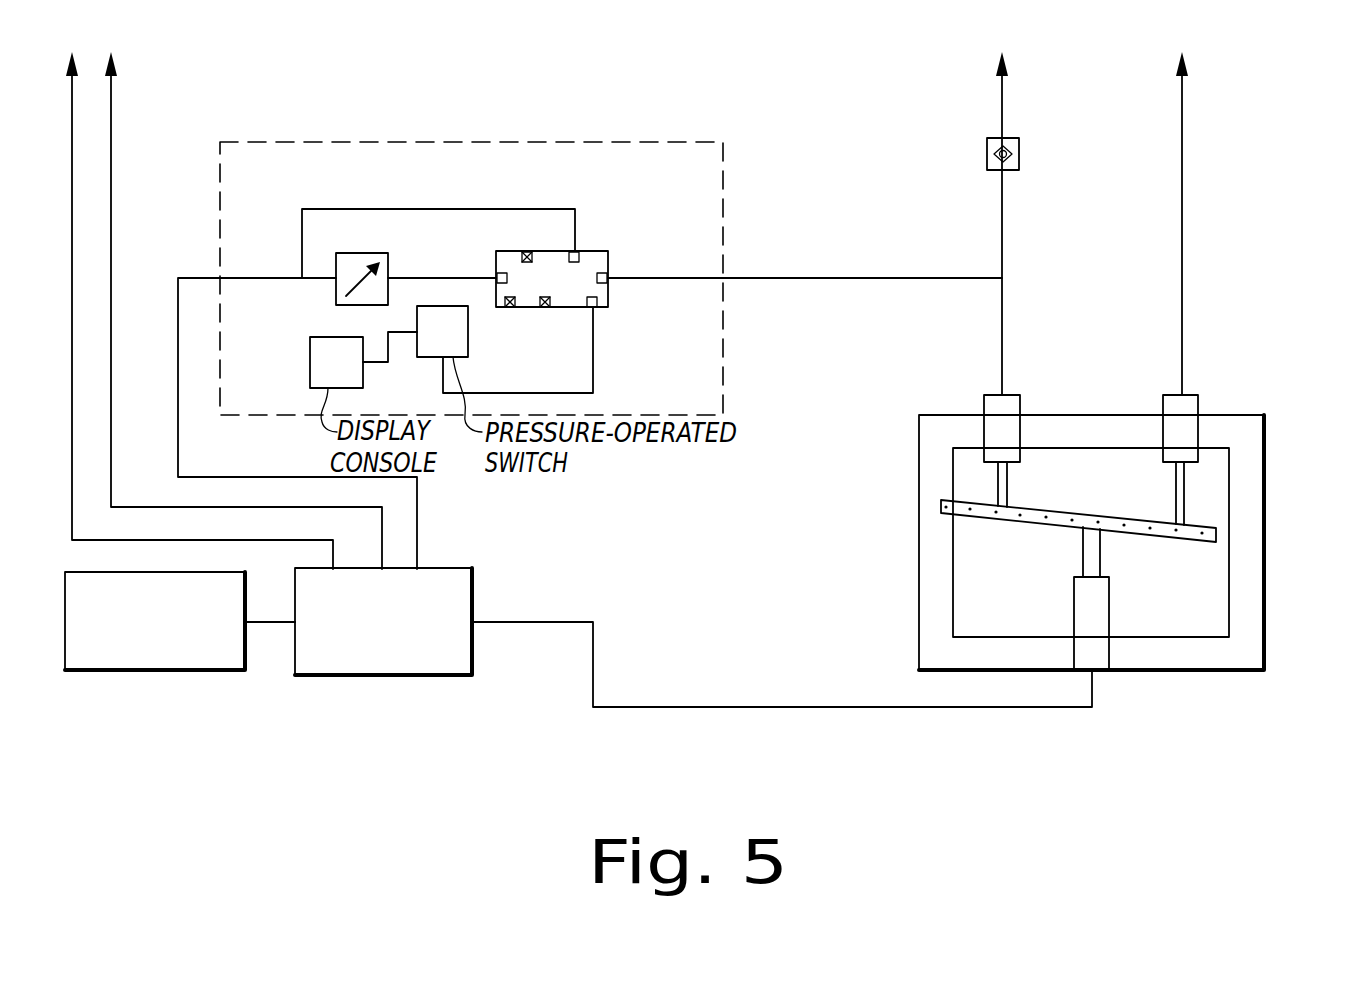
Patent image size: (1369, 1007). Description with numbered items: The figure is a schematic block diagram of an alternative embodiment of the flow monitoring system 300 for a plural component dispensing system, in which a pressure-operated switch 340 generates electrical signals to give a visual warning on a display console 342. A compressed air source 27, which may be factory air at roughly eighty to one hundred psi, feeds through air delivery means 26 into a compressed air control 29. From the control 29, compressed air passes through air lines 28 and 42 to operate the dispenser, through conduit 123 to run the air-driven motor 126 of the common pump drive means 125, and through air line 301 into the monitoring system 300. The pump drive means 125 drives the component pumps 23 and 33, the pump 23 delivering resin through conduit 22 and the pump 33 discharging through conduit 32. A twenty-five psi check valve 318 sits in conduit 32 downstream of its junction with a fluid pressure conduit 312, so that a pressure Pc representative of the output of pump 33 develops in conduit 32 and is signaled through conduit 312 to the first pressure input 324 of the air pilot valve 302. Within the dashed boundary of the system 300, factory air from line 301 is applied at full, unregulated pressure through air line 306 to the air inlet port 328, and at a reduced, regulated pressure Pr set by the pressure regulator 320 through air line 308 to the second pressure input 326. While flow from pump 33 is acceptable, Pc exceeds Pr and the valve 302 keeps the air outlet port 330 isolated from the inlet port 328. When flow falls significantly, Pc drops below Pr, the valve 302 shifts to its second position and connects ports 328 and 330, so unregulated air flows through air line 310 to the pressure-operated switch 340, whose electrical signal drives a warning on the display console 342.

The air line 28 is at (72, 153).
The air line 42 is at (111, 153).
The flow monitoring system 300 is at (492, 126).
The air line 301 is at (170, 278).
The air line 306 is at (302, 209).
The air line 308 is at (410, 278).
The pressure regulator 320 is at (336, 300).
The air pilot valve 302 is at (545, 314).
The second pressure input 326 is at (496, 278).
The air inlet port 328 is at (575, 252).
The first pressure input 324 is at (608, 283).
The air outlet port 330 is at (597, 307).
The fluid pressure conduit 312 is at (782, 278).
The air line 310 is at (593, 383).
The pressure-operated switch 340 is at (465, 357).
The display console 342 is at (310, 352).
The compressed air source 27 is at (160, 670).
The compressed air control 29 is at (395, 675).
The air delivery means 26 is at (256, 705).
The conduit 123 is at (770, 707).
The pump drive means 125 is at (1290, 535).
The air-driven motor 126 is at (1090, 600).
The component pump 33 is at (1020, 398).
The pump 23 is at (1198, 398).
The conduit 32 is at (1002, 238).
The conduit 22 is at (1182, 238).
The check valve 318 is at (1019, 153).